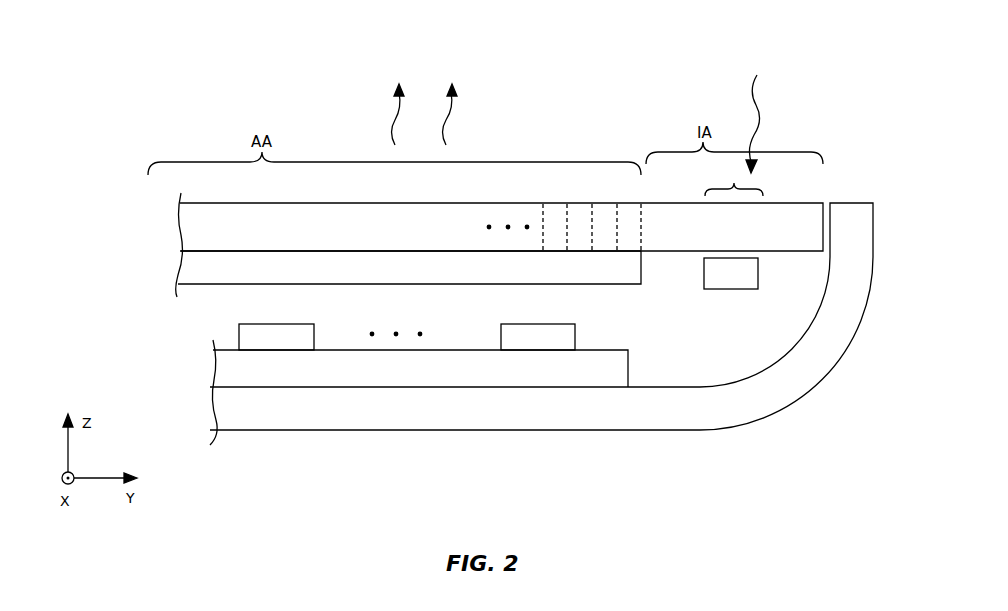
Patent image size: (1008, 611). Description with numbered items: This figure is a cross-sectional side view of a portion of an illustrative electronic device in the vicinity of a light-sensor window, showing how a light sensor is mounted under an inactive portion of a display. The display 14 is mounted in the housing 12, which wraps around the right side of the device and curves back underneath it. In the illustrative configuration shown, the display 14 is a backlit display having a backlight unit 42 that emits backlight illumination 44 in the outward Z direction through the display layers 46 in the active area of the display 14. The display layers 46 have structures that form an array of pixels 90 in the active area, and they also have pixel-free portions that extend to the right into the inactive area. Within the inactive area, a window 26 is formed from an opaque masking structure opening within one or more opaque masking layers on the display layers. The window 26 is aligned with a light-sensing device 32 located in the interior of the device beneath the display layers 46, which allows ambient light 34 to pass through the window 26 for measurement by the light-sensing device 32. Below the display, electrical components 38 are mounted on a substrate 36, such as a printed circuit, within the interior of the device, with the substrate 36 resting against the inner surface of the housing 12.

The housing 12 is at (802, 372).
The display 14 is at (345, 102).
The window 26 is at (734, 181).
The light-sensing device 32 is at (735, 282).
The ambient light 34 is at (756, 100).
The substrate 36 is at (270, 372).
The components 38 is at (500, 333).
The backlight unit 42 is at (190, 265).
The backlight illumination 44 is at (394, 119).
The display layers 46 is at (184, 222).
The pixels 90 is at (603, 212).